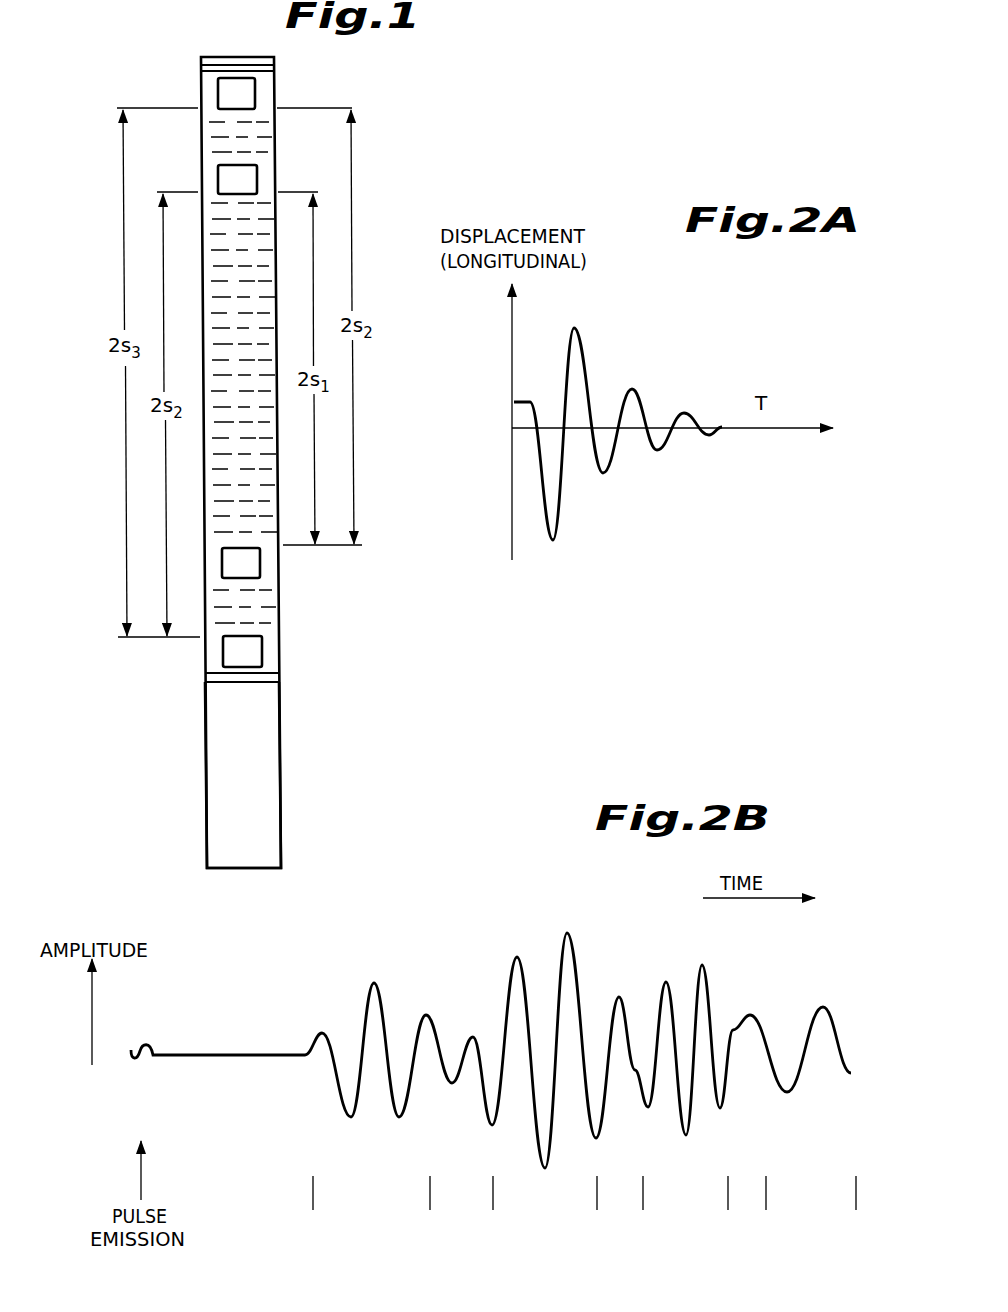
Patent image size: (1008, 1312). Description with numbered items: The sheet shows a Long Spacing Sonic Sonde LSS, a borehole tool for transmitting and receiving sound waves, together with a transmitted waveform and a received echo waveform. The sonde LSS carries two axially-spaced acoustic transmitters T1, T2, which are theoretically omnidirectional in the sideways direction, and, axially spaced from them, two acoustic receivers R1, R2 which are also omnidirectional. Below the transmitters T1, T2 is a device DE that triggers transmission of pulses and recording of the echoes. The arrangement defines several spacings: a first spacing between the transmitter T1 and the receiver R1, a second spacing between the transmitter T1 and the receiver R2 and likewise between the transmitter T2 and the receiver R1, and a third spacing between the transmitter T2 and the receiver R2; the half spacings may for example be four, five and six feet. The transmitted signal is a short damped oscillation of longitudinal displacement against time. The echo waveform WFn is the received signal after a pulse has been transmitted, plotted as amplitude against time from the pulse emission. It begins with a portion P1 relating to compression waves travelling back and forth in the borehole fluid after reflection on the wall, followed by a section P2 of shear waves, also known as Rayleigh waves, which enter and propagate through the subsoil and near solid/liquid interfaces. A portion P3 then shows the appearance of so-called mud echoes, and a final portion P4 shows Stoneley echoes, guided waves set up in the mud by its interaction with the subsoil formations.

In FIG. 1, the Long Spacing Sonic Sonde LSS is at (294, 101).
In FIG. 1, the acoustic receiver R1 is at (237, 179).
In FIG. 1, the acoustic receiver R2 is at (236, 93).
In FIG. 1, the acoustic transmitter T1 is at (241, 563).
In FIG. 1, the acoustic transmitter T2 is at (242, 651).
In FIG. 1, the device for triggering transmission and echo recording DE is at (268, 787).
In FIG. 2B, the echo waveform WFn is at (440, 962).
In FIG. 2B, the compression wave portion P1 is at (428, 1200).
In FIG. 2B, the shear wave portion P2 is at (595, 1198).
In FIG. 2B, the mud echo portion P3 is at (726, 1198).
In FIG. 2B, the Stoneley echo portion P4 is at (854, 1198).